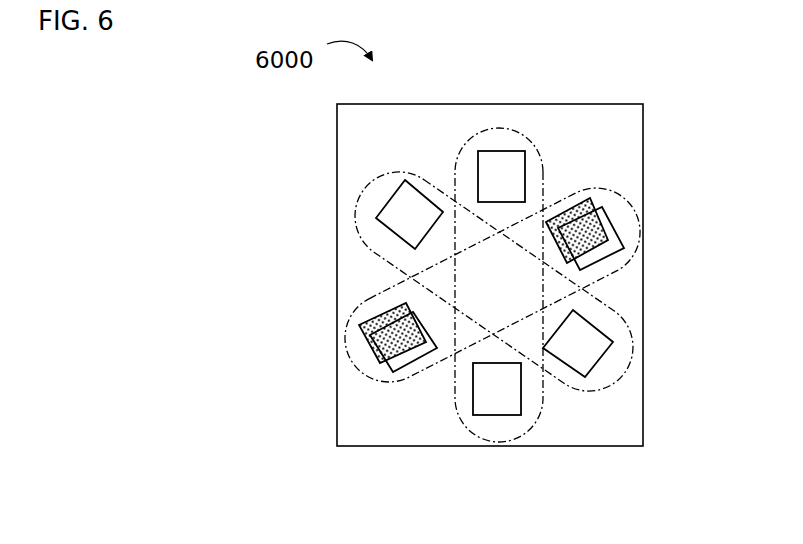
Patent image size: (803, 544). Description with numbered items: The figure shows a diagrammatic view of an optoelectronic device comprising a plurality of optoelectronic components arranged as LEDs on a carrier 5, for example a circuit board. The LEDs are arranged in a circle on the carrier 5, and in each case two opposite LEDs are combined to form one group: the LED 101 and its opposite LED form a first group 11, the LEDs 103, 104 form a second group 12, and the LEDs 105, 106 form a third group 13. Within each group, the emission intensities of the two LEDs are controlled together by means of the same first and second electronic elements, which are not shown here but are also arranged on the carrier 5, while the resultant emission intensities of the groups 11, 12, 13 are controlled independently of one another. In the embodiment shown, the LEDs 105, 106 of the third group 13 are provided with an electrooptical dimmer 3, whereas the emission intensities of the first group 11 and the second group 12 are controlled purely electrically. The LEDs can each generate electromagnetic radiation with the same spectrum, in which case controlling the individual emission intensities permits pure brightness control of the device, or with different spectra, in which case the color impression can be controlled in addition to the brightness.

The carrier 5 is at (563, 448).
The first group 11 is at (530, 140).
The second group 12 is at (623, 317).
The third group 13 is at (617, 197).
The electrooptical dimmer 3 is at (603, 215).
The optoelectronic component 101 is at (493, 160).
The optoelectronic component 103 is at (580, 350).
The optoelectronic component 104 is at (405, 213).
The optoelectronic component 105 is at (388, 370).
The optoelectronic component 106 is at (620, 257).